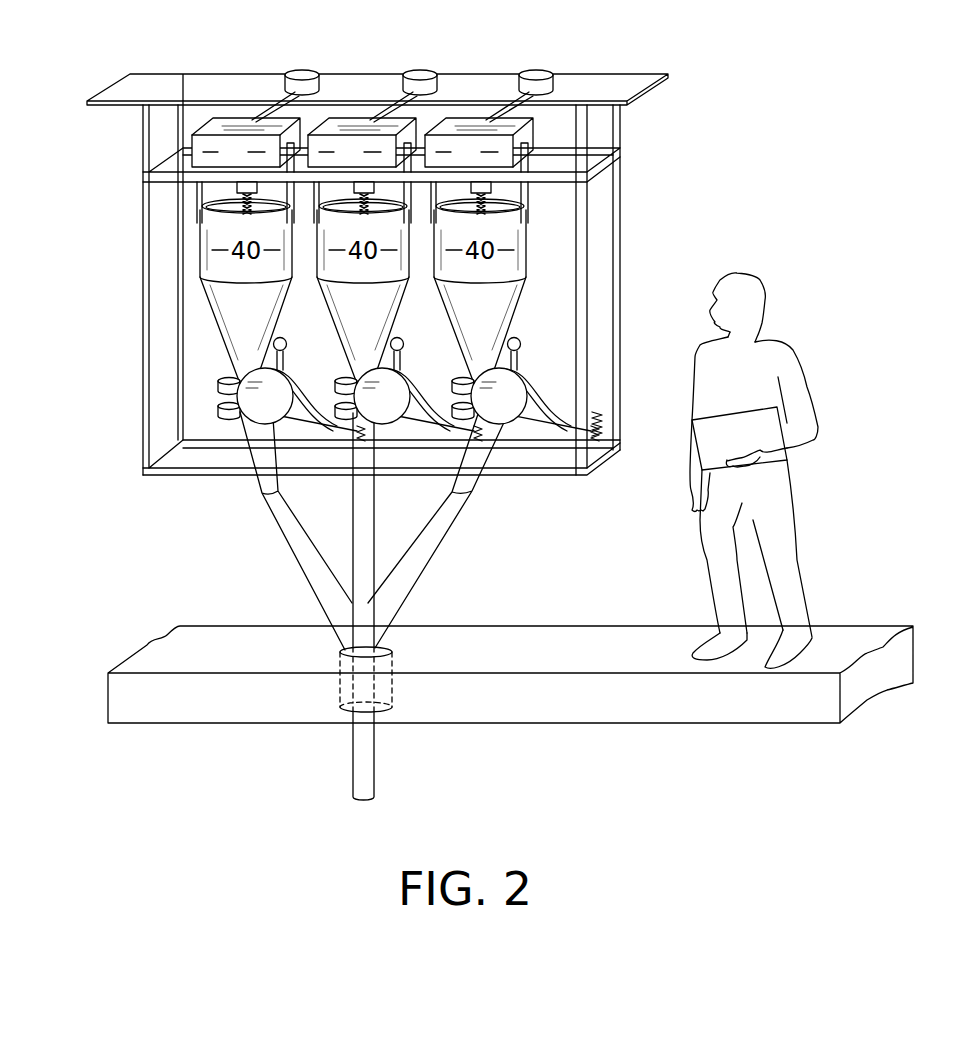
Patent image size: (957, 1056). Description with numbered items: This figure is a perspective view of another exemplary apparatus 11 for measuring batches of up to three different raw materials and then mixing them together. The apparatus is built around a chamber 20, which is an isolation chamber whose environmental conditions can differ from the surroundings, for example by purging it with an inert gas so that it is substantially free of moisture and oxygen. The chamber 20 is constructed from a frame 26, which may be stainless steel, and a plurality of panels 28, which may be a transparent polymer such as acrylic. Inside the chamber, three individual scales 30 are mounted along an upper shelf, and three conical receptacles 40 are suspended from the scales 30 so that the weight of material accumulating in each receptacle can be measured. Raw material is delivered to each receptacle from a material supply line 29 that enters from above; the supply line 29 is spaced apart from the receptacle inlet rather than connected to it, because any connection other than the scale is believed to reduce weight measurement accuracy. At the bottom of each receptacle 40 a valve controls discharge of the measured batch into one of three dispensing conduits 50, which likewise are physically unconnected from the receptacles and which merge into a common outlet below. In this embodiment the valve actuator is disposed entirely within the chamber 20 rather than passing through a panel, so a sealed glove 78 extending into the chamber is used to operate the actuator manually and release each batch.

The apparatus 11 is at (383, 410).
The chamber 20 is at (400, 274).
The frame 26 is at (618, 278).
The panels 28 is at (167, 358).
The material supply line 29 is at (272, 104).
The scales 30 is at (362, 142).
The receptacles 40 is at (362, 274).
The dispensing conduits 50 is at (260, 455).
The sealed glove 78 is at (270, 405).